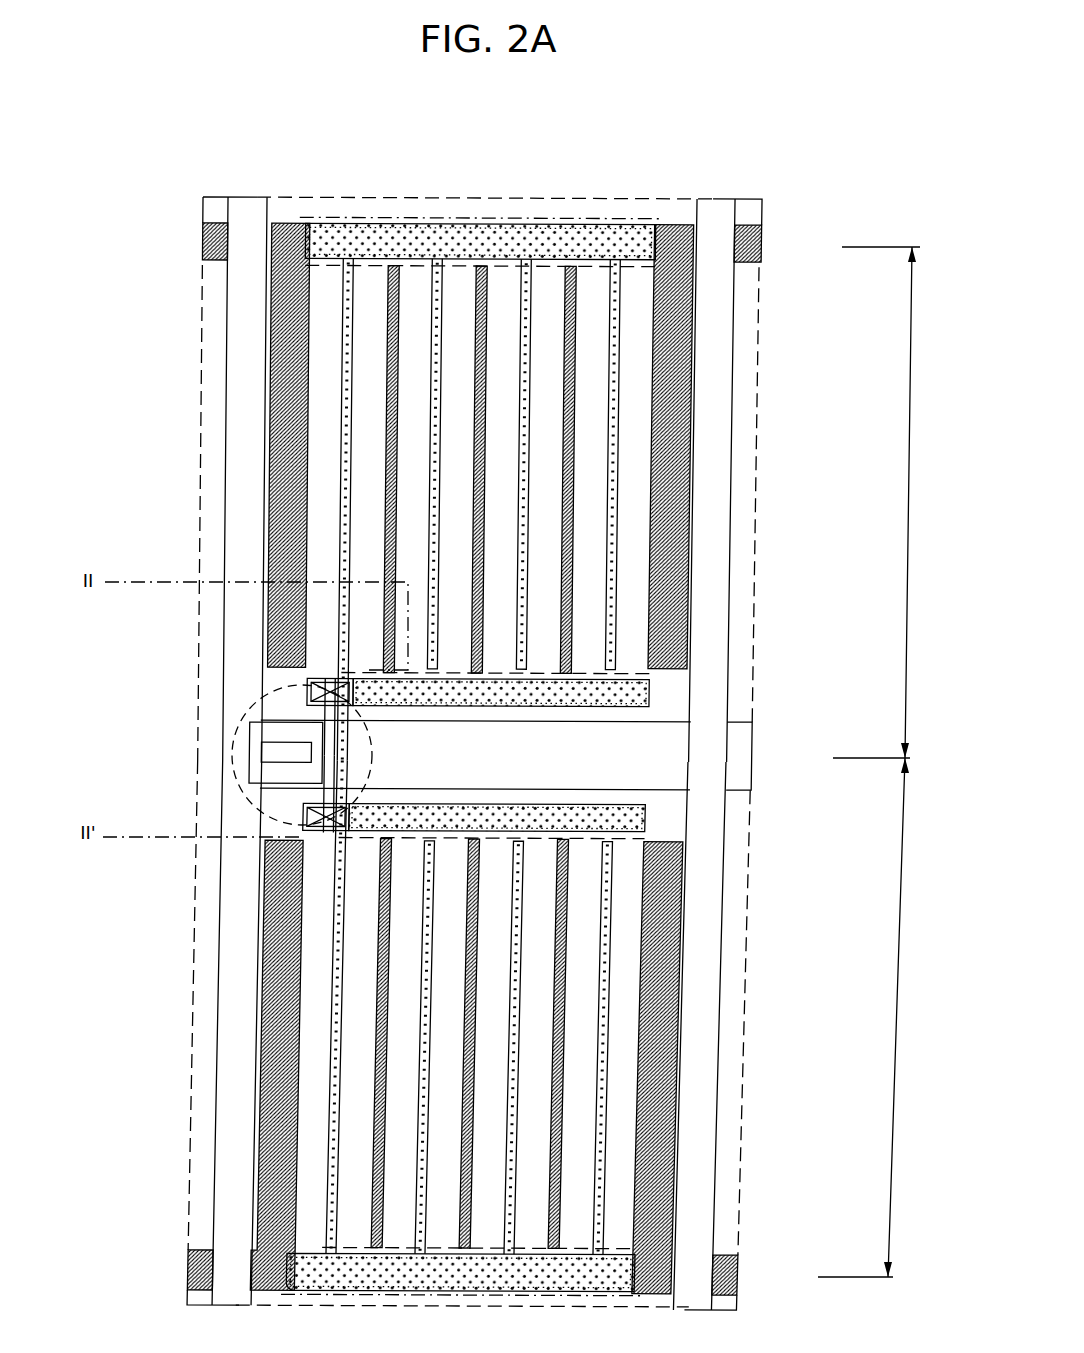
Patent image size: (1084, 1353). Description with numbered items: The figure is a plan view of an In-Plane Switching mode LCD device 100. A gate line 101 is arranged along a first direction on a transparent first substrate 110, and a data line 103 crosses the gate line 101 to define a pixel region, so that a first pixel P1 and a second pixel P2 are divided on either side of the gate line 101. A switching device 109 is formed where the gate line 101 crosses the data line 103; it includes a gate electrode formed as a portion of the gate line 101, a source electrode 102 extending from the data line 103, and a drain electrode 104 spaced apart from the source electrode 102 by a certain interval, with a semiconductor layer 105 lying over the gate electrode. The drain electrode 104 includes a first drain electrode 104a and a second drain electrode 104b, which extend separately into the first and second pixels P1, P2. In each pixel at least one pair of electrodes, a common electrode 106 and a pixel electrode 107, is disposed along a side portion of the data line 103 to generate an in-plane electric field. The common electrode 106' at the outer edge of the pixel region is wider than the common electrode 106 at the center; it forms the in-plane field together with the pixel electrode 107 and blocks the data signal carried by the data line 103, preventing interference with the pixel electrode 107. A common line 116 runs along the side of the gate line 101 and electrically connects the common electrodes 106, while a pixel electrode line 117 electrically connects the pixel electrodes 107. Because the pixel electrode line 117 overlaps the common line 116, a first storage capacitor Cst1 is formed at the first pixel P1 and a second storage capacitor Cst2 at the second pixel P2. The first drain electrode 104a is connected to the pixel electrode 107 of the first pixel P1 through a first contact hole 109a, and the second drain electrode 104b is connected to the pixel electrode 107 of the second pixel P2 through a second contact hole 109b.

The LCD device 100 is at (165, 173).
The gate line 101 is at (735, 737).
The source electrode 102 is at (258, 721).
The data line 103 is at (237, 457).
The drain electrode 104 is at (262, 760).
The first drain electrode 104a is at (302, 686).
The second drain electrode 104b is at (317, 800).
The semiconductor layer 105 is at (270, 749).
The common electrode 106 is at (477, 678).
The common electrode (outer edge) 106' is at (489, 758).
The pixel electrode 107 is at (426, 300).
The switching device 109 is at (373, 763).
The first contact hole 109a is at (305, 681).
The second contact hole 109b is at (300, 828).
The first substrate 110 is at (762, 207).
The common line 116 is at (762, 243).
The pixel electrode line 117 is at (565, 228).
The first storage capacitor Cst1 is at (511, 217).
The second storage capacitor Cst2 is at (620, 1245).
The first pixel P1 is at (884, 502).
The second pixel P2 is at (872, 1017).